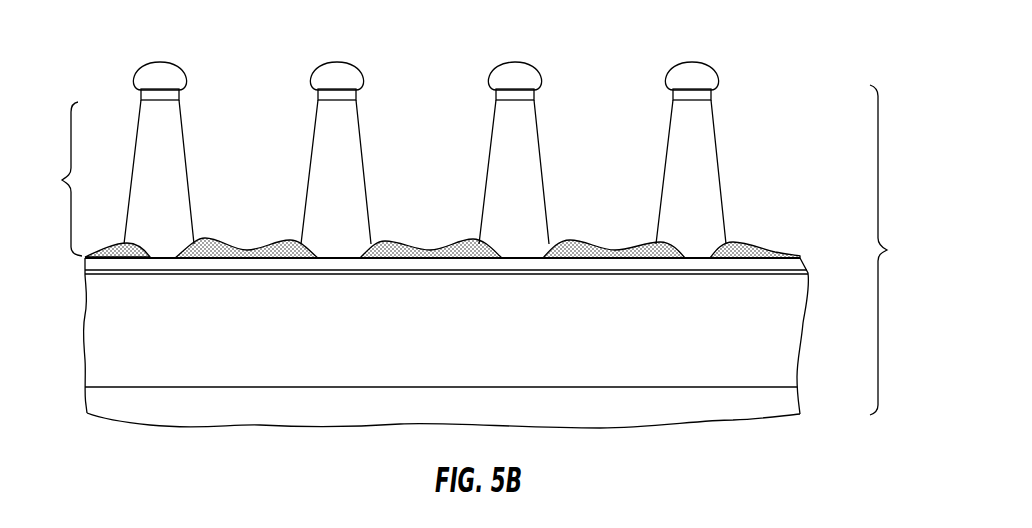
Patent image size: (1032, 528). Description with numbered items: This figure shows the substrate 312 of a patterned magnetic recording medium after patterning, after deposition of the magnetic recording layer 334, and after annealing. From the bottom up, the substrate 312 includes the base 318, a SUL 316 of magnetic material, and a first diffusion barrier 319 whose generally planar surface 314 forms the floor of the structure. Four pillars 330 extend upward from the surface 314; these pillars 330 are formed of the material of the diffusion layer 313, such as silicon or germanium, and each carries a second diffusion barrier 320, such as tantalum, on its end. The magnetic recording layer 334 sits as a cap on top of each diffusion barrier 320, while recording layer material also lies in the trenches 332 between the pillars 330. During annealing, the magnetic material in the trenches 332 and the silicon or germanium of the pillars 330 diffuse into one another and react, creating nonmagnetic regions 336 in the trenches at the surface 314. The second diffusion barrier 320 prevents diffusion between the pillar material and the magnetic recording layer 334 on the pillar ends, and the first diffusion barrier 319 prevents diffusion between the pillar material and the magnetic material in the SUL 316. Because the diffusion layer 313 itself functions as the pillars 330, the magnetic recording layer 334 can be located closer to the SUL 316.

The substrate 312 is at (900, 250).
The diffusion layer 313 is at (55, 179).
The planar surface 314 is at (698, 257).
The SUL 316 is at (793, 330).
The base 318 is at (793, 400).
The first diffusion barrier 319 is at (785, 267).
The second diffusion barrier 320 is at (161, 101).
The pillars 330 is at (171, 158).
The trenches 332 is at (95, 238).
The magnetic recording layer 334 is at (158, 66).
The nonmagnetic regions 336 is at (128, 254).